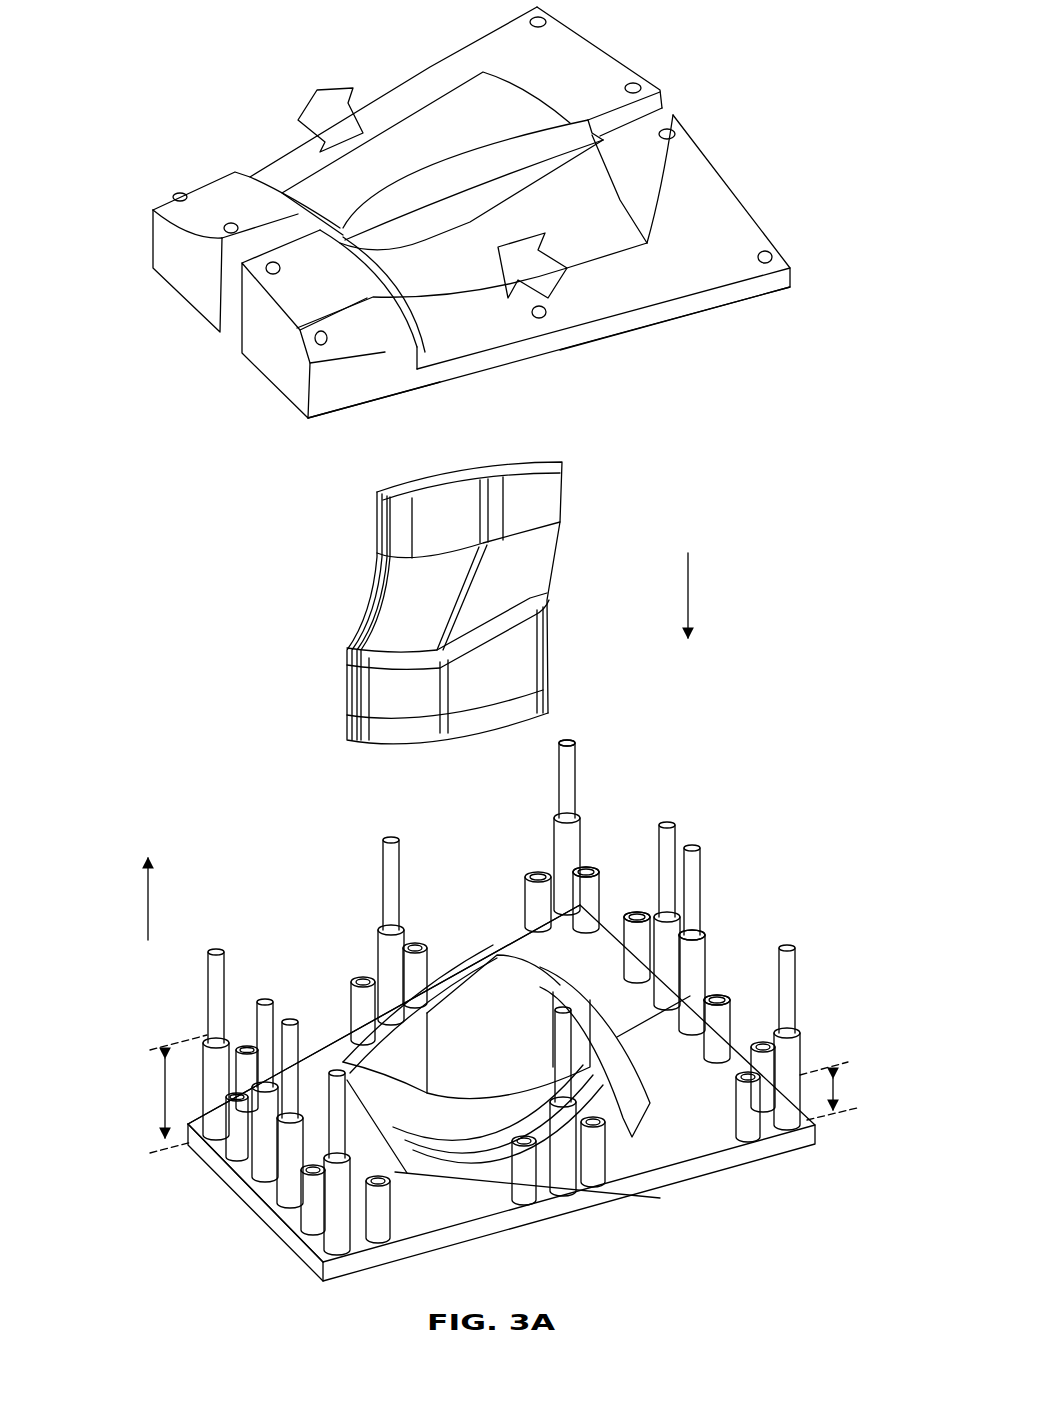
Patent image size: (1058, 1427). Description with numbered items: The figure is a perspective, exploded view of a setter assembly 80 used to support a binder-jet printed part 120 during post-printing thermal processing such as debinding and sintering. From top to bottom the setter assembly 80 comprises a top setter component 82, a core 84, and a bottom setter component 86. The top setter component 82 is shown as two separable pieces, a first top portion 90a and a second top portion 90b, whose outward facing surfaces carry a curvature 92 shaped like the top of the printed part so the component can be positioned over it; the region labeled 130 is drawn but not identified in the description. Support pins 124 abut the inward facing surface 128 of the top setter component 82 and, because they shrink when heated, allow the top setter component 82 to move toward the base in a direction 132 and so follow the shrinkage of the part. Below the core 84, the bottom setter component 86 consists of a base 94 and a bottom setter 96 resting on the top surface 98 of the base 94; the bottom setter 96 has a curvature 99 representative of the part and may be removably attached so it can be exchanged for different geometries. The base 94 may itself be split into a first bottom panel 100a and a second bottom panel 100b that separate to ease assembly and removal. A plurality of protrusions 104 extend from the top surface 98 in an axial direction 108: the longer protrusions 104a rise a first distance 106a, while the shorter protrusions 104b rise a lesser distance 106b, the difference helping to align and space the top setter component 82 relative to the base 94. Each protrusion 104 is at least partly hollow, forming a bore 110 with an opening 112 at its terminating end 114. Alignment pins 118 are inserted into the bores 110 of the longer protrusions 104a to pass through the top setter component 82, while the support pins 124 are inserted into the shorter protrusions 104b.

The setter assembly 80 is at (256, 78).
The top setter component 82 is at (699, 86).
The first top portion 90a is at (606, 40).
The second top portion 90b is at (735, 185).
The curvature 92 is at (335, 185).
The binder-jet printed part 120 is at (182, 197).
The support pins 124 is at (735, 290).
The inward facing surface 128 is at (422, 398).
The curved block surface 130 is at (368, 340).
The core 84 is at (570, 562).
The direction 132 is at (690, 582).
The bottom setter component 86 is at (832, 918).
The base 94 is at (690, 1168).
The bottom setter 96 is at (322, 1058).
The top surface 98 is at (617, 1168).
The curvature 99 is at (513, 1065).
The first bottom panel 100a is at (290, 1232).
The second bottom panel 100b is at (225, 1173).
The protrusions 104 is at (805, 1052).
The protrusions 104a is at (333, 1237).
The protrusions 104b is at (533, 1190).
The first distance 106a is at (158, 1093).
The distance 106b is at (840, 1090).
The axial direction 108 is at (145, 897).
The bore 110 is at (637, 905).
The opening 112 is at (592, 850).
The terminating end 114 is at (722, 982).
The alignment pins 118 is at (582, 745).